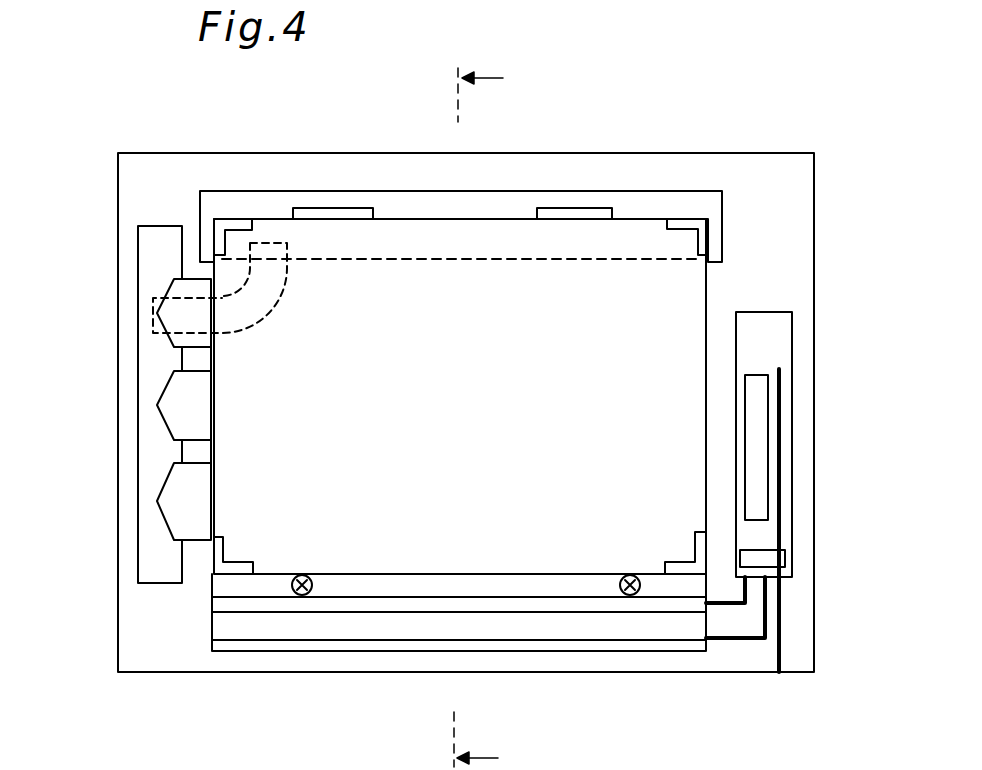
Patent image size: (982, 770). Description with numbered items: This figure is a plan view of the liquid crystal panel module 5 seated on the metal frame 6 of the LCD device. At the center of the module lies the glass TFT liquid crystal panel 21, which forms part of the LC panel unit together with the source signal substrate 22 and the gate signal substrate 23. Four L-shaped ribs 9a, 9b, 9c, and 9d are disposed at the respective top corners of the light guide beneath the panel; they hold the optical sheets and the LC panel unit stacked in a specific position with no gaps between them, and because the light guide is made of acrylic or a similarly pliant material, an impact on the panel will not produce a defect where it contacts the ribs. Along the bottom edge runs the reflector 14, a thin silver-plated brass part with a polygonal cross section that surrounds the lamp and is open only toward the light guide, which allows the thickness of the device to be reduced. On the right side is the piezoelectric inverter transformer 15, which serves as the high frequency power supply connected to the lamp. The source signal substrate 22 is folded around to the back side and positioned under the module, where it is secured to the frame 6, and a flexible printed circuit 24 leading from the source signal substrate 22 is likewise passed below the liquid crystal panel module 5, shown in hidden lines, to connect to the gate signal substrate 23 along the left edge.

The metal frame 6 is at (792, 205).
The source signal substrate 22 is at (498, 197).
The TFT liquid crystal panel 21 is at (472, 399).
The L-shaped rib 9a is at (670, 560).
The L-shaped rib 9b is at (687, 223).
The L-shaped rib 9c is at (222, 228).
The L-shaped rib 9d is at (237, 568).
The reflector 14 is at (252, 630).
The gate signal substrate 23 is at (148, 273).
The flexible printed circuit 24 is at (253, 293).
The piezoelectric inverter transformer 15 is at (772, 355).
The liquid crystal panel module 5 is at (493, 415).